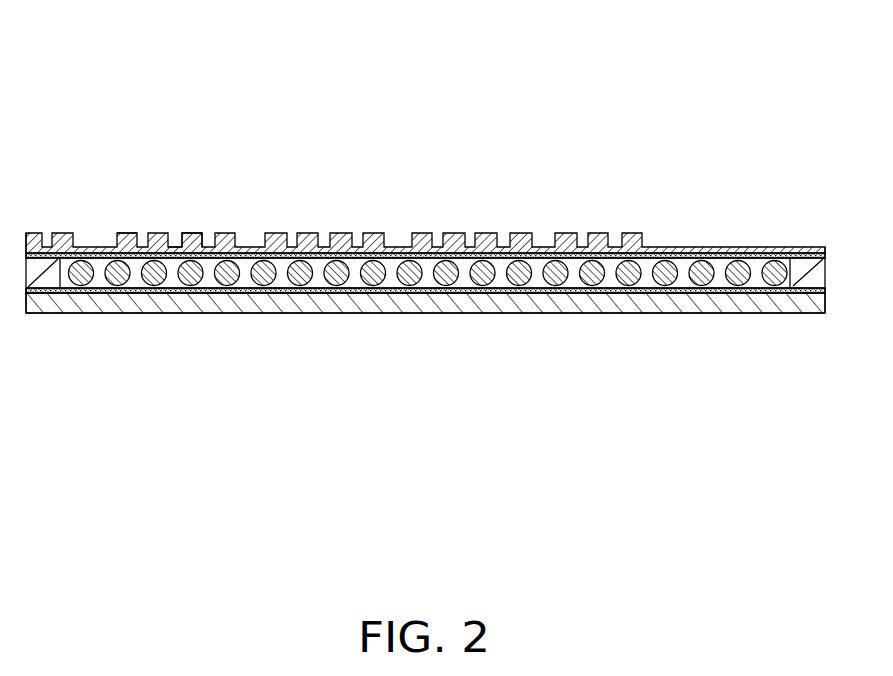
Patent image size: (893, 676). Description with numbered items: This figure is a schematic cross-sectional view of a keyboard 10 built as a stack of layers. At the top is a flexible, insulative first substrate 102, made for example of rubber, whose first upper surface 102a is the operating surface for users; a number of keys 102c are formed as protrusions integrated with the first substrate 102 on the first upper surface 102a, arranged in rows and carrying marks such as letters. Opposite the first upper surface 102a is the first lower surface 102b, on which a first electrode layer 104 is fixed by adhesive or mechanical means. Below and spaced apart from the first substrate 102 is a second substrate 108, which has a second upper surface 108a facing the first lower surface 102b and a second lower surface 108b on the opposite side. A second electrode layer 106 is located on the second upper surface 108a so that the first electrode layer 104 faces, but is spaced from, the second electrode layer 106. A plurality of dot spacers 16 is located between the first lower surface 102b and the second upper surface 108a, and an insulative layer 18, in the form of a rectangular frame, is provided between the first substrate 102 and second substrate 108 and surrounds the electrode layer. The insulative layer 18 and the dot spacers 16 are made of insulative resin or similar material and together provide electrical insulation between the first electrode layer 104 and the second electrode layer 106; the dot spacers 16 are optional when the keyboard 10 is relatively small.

The keyboard 10 is at (401, 105).
The first substrate 102 is at (150, 145).
The first upper surface 102a is at (175, 236).
The first lower surface 102b is at (194, 246).
The key 102c is at (128, 233).
The first electrode layer 104 is at (697, 249).
The dot spacer 16 is at (387, 261).
The insulative layer 18 is at (802, 258).
The second electrode layer 106 is at (100, 292).
The second substrate 108 is at (510, 300).
The second upper surface 108a is at (260, 296).
The second lower surface 108b is at (755, 316).